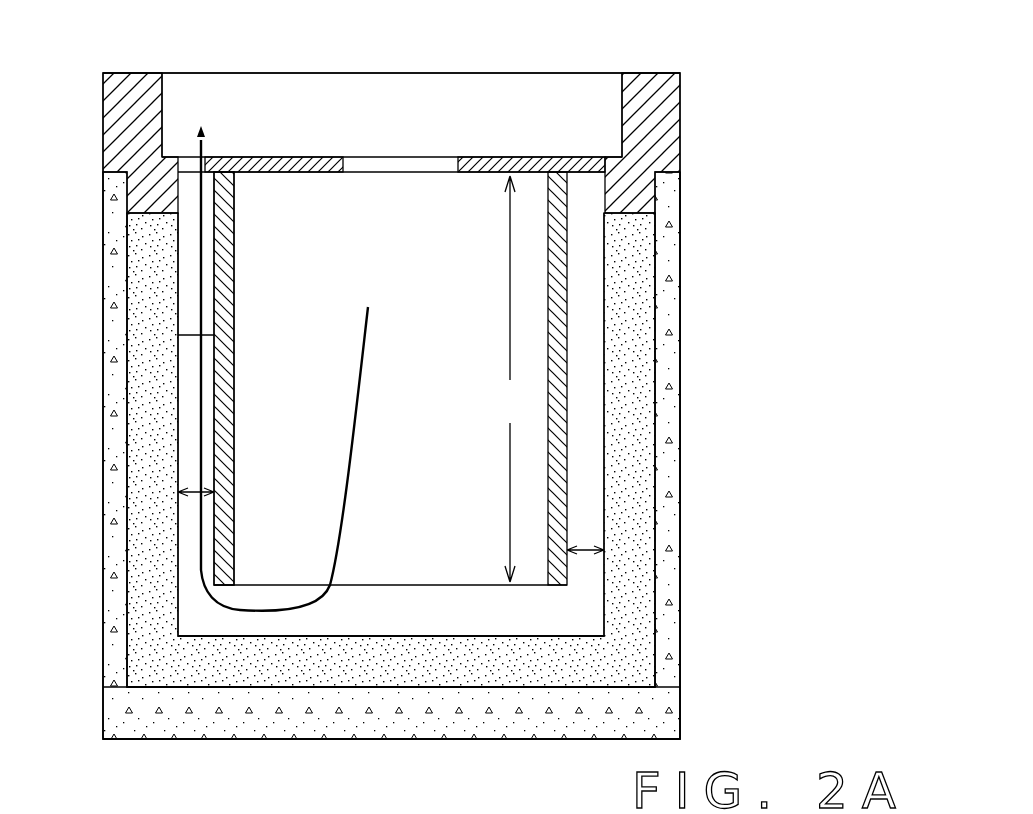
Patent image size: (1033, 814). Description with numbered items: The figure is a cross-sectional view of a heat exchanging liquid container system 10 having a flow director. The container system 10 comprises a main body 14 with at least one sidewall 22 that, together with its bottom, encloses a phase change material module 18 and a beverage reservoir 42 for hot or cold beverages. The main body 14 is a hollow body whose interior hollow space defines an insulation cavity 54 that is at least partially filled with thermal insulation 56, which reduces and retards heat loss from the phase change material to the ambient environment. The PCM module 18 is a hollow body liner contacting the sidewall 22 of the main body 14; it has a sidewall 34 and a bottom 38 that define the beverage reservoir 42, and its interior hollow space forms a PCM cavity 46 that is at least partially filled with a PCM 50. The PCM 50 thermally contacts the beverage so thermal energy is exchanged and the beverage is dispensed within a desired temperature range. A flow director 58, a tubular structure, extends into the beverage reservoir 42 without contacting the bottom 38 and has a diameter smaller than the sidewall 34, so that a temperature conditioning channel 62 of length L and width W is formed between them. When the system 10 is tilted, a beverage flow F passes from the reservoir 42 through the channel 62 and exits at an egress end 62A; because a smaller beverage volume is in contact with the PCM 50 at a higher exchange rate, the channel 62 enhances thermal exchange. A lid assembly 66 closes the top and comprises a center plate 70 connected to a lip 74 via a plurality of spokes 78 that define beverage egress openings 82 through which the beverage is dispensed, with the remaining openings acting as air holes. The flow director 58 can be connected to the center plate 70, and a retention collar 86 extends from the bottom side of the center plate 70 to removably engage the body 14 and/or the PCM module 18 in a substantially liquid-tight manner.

The container system 10 is at (766, 65).
The main body 14 is at (690, 420).
The phase change material module 18 is at (185, 550).
The sidewall 22 is at (118, 275).
The sidewall 34 is at (180, 335).
The bottom 38 is at (378, 635).
The beverage reservoir 42 is at (405, 422).
The PCM cavity 46 is at (145, 360).
The phase change material 50 is at (152, 232).
The insulation cavity 54 is at (112, 418).
The thermal insulation 56 is at (663, 708).
The flow director 58 is at (233, 405).
The temperature conditioning channel 62 is at (205, 247).
The egress end 62A is at (208, 188).
The lid assembly 66 is at (705, 127).
The center plate 70 is at (303, 156).
The lip 74 is at (661, 73).
The spokes 78 is at (174, 170).
The beverage egress openings 82 is at (206, 165).
The retention collar 86 is at (180, 198).
The beverage flow F is at (365, 372).
The length L is at (510, 379).
The width W is at (178, 498).